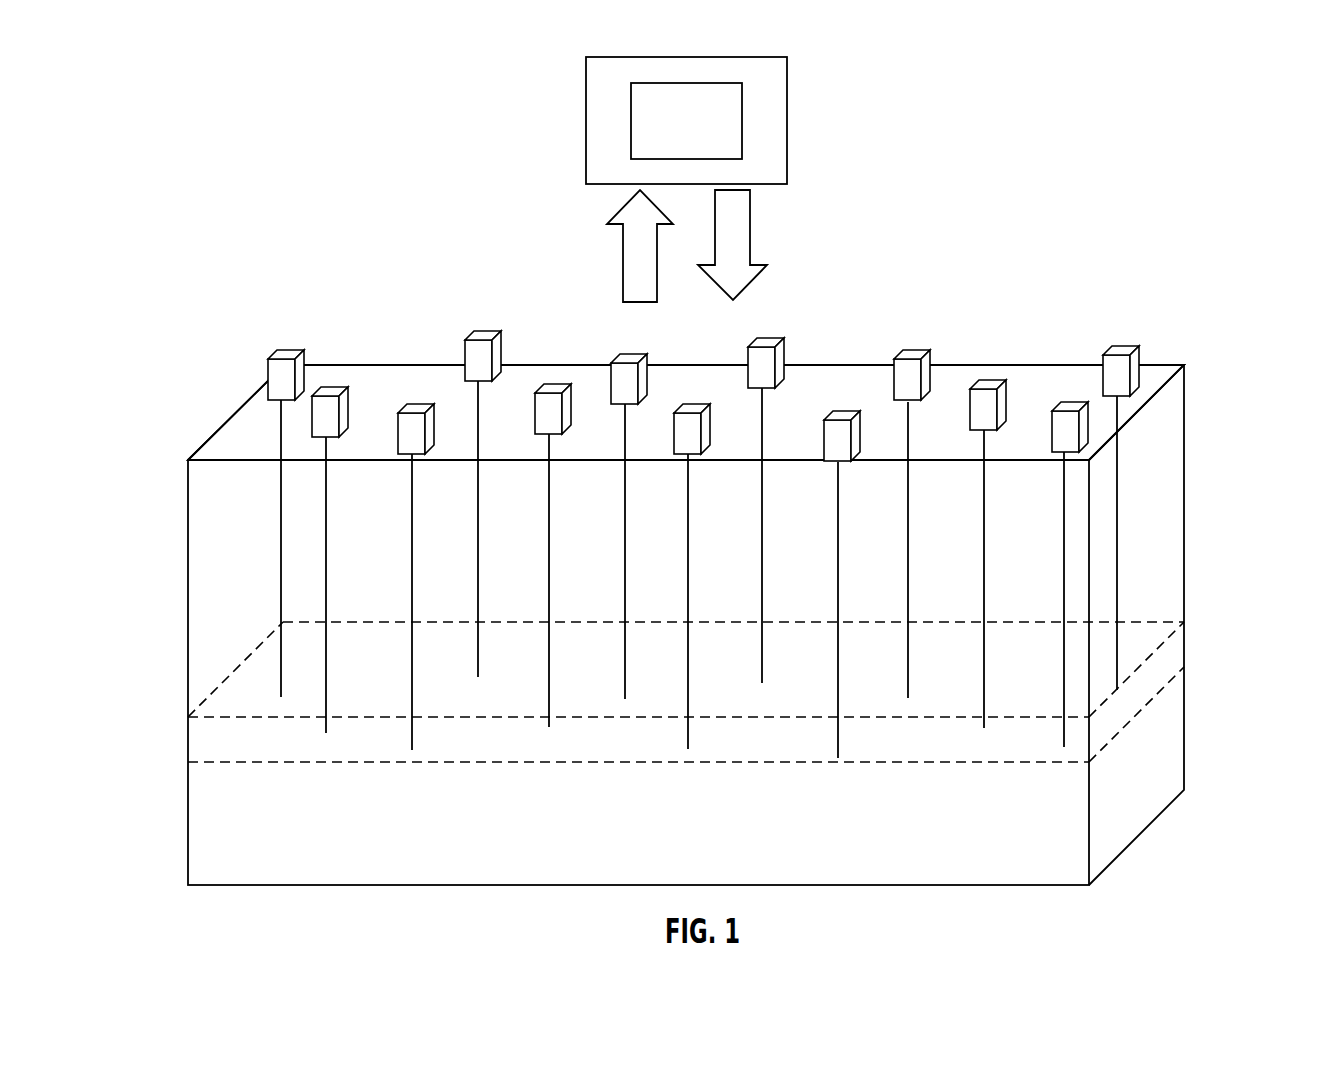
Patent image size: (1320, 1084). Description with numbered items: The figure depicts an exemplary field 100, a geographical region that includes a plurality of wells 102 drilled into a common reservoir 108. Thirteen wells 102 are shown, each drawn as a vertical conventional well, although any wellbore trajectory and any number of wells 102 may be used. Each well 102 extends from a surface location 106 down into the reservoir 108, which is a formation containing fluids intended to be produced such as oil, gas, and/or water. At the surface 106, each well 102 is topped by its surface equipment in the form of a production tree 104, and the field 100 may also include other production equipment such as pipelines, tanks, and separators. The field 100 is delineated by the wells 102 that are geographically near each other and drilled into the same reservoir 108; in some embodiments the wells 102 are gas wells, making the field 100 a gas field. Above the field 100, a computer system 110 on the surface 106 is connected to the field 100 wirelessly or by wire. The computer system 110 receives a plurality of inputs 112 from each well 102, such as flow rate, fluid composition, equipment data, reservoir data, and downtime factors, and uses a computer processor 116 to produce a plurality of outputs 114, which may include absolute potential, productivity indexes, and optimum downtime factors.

The field 100 is at (1133, 228).
The well 102 is at (280, 480).
The production tree 104 is at (282, 375).
The surface location 106 is at (1155, 370).
The reservoir 108 is at (1152, 668).
The computer system 110 is at (727, 120).
The inputs 112 is at (620, 262).
The outputs 114 is at (752, 238).
The computer processor 116 is at (705, 137).